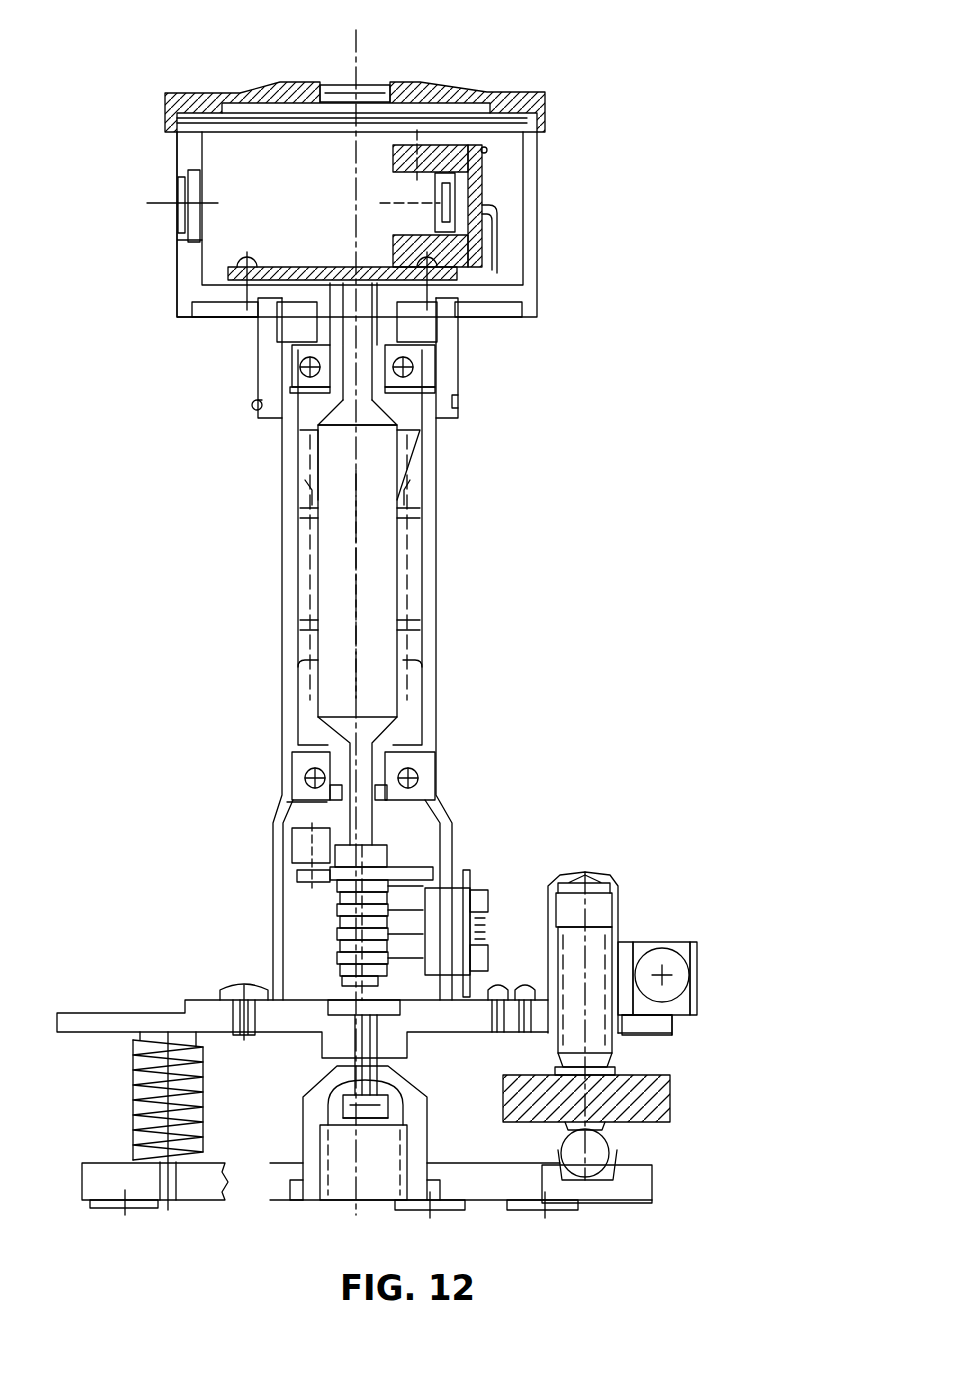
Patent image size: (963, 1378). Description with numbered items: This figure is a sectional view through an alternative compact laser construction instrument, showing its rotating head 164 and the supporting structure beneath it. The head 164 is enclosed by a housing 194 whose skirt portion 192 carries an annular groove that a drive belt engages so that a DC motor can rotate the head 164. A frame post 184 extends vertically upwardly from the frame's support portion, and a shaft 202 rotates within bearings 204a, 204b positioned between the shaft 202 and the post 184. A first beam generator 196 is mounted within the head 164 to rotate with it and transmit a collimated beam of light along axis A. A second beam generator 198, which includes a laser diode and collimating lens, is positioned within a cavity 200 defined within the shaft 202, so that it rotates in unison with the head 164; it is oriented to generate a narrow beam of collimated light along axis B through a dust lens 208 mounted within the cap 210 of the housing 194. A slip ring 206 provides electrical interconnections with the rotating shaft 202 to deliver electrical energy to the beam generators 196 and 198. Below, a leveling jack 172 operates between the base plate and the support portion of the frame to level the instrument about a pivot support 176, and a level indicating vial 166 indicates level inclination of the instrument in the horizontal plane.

The rotating head 164 is at (535, 227).
The level indicating vial 166 is at (697, 955).
The leveling jack 172 is at (670, 1098).
The pivot support 176 is at (303, 1065).
The post 184 is at (435, 607).
The skirt portion 192 is at (457, 338).
The housing 194 is at (177, 265).
The first beam generator 196 is at (470, 185).
The second beam generator 198 is at (395, 532).
The cavity 200 is at (405, 550).
The shaft 202 is at (408, 490).
The bearing 204a is at (298, 370).
The bearing 204b is at (312, 780).
The slip ring 206 is at (333, 928).
The dust lens 208 is at (363, 82).
The cap 210 is at (527, 90).
The axis A is at (163, 202).
The axis B is at (352, 47).